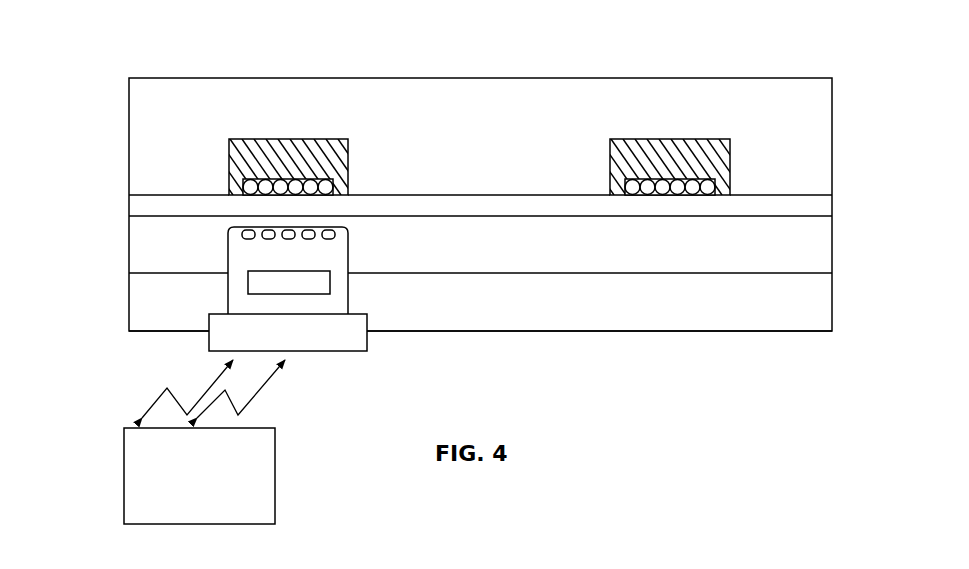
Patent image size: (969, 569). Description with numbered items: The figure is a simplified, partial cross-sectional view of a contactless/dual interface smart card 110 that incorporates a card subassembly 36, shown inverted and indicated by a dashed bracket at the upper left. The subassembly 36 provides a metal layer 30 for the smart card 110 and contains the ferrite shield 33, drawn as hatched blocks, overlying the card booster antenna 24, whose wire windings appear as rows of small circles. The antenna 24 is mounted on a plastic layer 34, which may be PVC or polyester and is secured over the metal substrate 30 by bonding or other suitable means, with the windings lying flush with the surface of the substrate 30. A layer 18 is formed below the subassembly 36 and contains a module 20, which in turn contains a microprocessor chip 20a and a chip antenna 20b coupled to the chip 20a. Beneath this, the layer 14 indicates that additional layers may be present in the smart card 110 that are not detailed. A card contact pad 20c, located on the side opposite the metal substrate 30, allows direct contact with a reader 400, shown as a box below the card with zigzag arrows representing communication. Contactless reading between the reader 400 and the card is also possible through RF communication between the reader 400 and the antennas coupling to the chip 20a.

The contactless/dual interface smart card 110 is at (831, 65).
The card subassembly 36 is at (123, 78).
The ferrite shield 33 is at (329, 139).
The antenna 24 is at (257, 202).
The metal layer 30 is at (832, 160).
The plastic layer 34 is at (832, 205).
The layer 18 is at (832, 260).
The layer 14 is at (832, 308).
The module 20 is at (298, 260).
The microprocessor chip 20a is at (330, 279).
The chip antenna 20b is at (252, 241).
The card contact pad 20c is at (342, 340).
The reader 400 is at (263, 467).